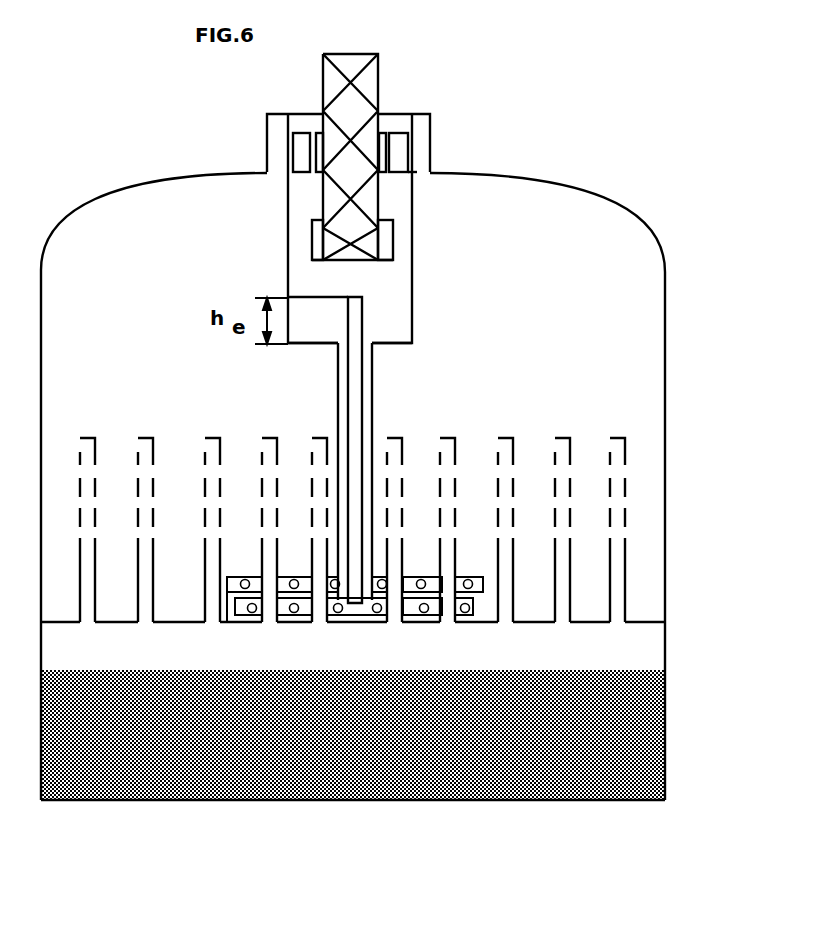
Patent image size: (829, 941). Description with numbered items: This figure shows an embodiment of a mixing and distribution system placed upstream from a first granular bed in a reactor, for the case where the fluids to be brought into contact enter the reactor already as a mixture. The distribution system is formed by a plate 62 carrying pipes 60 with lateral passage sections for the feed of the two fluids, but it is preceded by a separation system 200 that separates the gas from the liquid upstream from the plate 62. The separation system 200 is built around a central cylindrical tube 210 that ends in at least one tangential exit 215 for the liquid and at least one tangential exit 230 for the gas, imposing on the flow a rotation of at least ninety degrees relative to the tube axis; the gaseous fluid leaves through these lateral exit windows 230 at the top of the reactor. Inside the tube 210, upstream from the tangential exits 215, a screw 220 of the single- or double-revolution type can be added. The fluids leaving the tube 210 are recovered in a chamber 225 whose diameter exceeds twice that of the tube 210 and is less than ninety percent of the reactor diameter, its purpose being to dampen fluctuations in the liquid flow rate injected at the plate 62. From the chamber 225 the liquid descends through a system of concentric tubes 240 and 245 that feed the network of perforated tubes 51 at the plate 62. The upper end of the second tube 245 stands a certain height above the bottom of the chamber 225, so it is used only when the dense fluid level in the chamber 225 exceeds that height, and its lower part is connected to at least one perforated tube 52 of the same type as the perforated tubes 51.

The screw 220 is at (362, 96).
The tangential exit for the gas 230 is at (300, 181).
The separation system 200 is at (288, 278).
The tangential exit for the liquid 215 is at (395, 255).
The central cylindrical tube 210 is at (370, 262).
The chamber 225 is at (408, 348).
The tube 240 is at (345, 383).
The second tube 245 is at (362, 376).
The pipes 60 is at (137, 452).
The plate 62 is at (648, 621).
The perforated tubes 51 is at (227, 603).
The perforated tube 52 is at (295, 607).